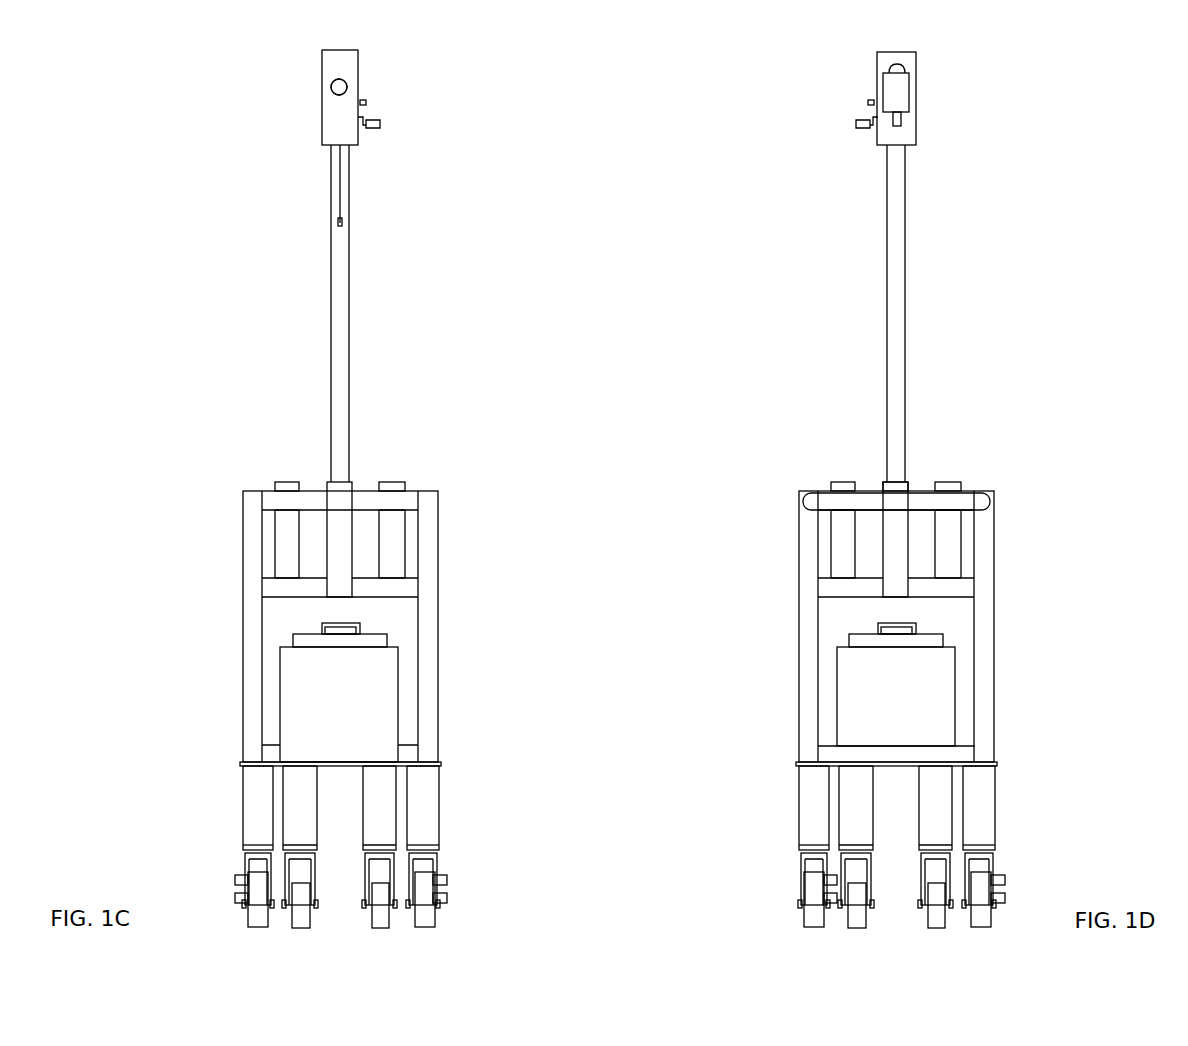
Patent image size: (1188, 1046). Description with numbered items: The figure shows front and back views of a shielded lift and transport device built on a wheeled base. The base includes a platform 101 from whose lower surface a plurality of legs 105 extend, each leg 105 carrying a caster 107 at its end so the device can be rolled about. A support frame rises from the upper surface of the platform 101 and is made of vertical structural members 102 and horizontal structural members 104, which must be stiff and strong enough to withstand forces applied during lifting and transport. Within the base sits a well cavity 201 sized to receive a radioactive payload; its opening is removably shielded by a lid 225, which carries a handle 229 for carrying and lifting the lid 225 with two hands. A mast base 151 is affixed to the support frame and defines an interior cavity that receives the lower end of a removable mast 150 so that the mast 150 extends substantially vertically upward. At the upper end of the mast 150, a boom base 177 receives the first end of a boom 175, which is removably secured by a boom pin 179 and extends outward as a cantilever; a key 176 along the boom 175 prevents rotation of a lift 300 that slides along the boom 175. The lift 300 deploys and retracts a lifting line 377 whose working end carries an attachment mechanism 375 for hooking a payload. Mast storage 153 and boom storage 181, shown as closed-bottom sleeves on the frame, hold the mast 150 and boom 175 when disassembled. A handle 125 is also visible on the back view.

In FIG. 1C, the platform 101 is at (441, 764).
In FIG. 1D, the platform 101 is at (1000, 764).
In FIG. 1C, the vertical structural member 102 is at (428, 532).
In FIG. 1D, the vertical structural member 102 is at (808, 532).
In FIG. 1C, the horizontal structural member 104 is at (380, 594).
In FIG. 1D, the horizontal structural member 104 is at (825, 594).
In FIG. 1C, the leg 105 is at (428, 792).
In FIG. 1D, the leg 105 is at (815, 792).
In FIG. 1C, the caster 107 is at (258, 928).
In FIG. 1D, the caster 107 is at (814, 928).
In FIG. 1D, the handle 125 is at (970, 501).
In FIG. 1C, the mast 150 is at (345, 392).
In FIG. 1D, the mast 150 is at (896, 392).
In FIG. 1C, the mast base 151 is at (337, 493).
In FIG. 1D, the mast base 151 is at (887, 489).
In FIG. 1C, the mast storage 153 is at (395, 487).
In FIG. 1D, the mast storage 153 is at (908, 487).
In FIG. 1C, the boom 175 is at (348, 83).
In FIG. 1C, the key 176 is at (340, 80).
In FIG. 1D, the boom base 177 is at (905, 100).
In FIG. 1D, the boom pin 179 is at (902, 69).
In FIG. 1C, the boom storage 181 is at (283, 482).
In FIG. 1D, the boom storage 181 is at (956, 483).
In FIG. 1C, the well cavity 201 is at (355, 701).
In FIG. 1D, the well cavity 201 is at (883, 701).
In FIG. 1C, the lid 225 is at (387, 642).
In FIG. 1D, the lid 225 is at (849, 642).
In FIG. 1C, the handle 229 is at (322, 627).
In FIG. 1D, the handle 229 is at (920, 627).
In FIG. 1C, the lift 300 is at (358, 93).
In FIG. 1D, the lift 300 is at (877, 93).
In FIG. 1C, the attachment mechanism 375 is at (338, 222).
In FIG. 1C, the lifting line 377 is at (340, 188).